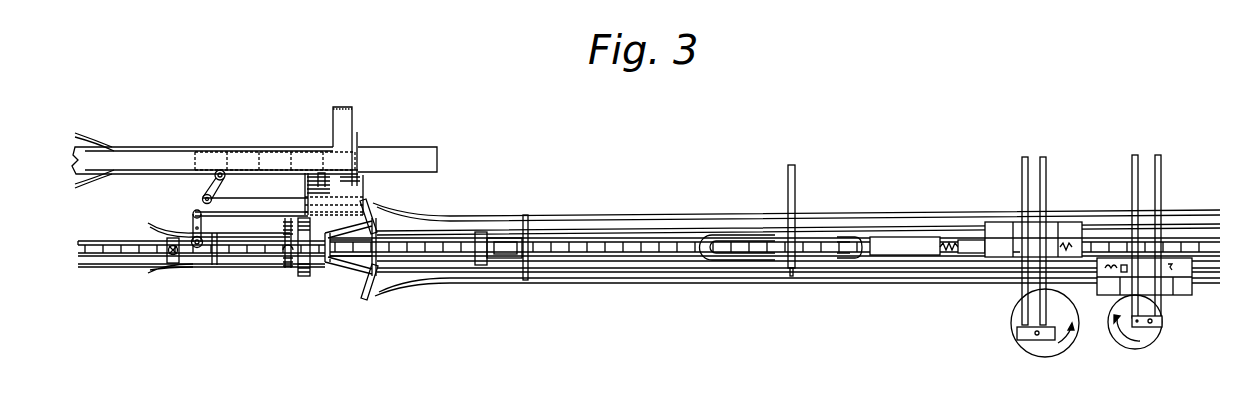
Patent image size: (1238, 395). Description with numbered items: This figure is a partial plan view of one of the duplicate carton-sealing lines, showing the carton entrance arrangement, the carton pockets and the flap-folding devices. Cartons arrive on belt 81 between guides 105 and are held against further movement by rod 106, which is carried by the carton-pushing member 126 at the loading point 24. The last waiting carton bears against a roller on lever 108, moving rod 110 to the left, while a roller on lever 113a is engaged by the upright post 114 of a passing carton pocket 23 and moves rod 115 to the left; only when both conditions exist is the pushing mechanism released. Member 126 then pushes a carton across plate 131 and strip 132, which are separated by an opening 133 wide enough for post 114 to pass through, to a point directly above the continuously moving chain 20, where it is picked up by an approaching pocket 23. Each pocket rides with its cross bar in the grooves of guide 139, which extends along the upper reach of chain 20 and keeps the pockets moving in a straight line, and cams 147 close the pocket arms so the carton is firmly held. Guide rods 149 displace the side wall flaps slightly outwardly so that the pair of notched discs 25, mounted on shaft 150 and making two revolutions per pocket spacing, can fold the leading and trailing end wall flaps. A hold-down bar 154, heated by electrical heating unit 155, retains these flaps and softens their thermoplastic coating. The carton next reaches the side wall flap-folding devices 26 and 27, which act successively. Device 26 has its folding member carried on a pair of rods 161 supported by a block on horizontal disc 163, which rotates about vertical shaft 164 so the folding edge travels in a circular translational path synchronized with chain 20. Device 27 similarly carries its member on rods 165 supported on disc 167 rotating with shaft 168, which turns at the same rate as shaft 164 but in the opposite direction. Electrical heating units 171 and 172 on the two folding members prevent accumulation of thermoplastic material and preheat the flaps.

The belt 81 is at (106, 160).
The guides 105 is at (160, 170).
The loading station 24 is at (327, 130).
The carton-pushing member 126 is at (353, 122).
The rod 106 is at (363, 157).
The plate 131 is at (363, 189).
The lever 108 is at (212, 189).
The rod 110 is at (281, 199).
The lever 113a is at (193, 222).
The rod 115 is at (262, 217).
The chain 20 is at (82, 256).
The upright post 114 is at (173, 265).
The carton pocket 23 is at (503, 294).
The opening 133 is at (287, 252).
The strip 132 is at (311, 270).
The cams 147 is at (587, 279).
The guide 139 is at (653, 269).
The discs 25 is at (764, 233).
The shaft 150 is at (796, 201).
The electrical heating unit 155 is at (898, 244).
The guide rods 149 is at (713, 260).
The hold-down bar 154 is at (858, 258).
The side wall flap-folding device 26 is at (1006, 205).
The rods 161 is at (1049, 158).
The rods 165 is at (1157, 155).
The electrical heating unit 171 is at (1017, 250).
The vertical shaft 164 is at (1022, 327).
The horizontal disc 163 is at (1027, 343).
The disc 167 is at (1113, 338).
The shaft 168 is at (1130, 328).
The electrical heating unit 172 is at (1173, 275).
The side wall flap-folding device 27 is at (1171, 326).